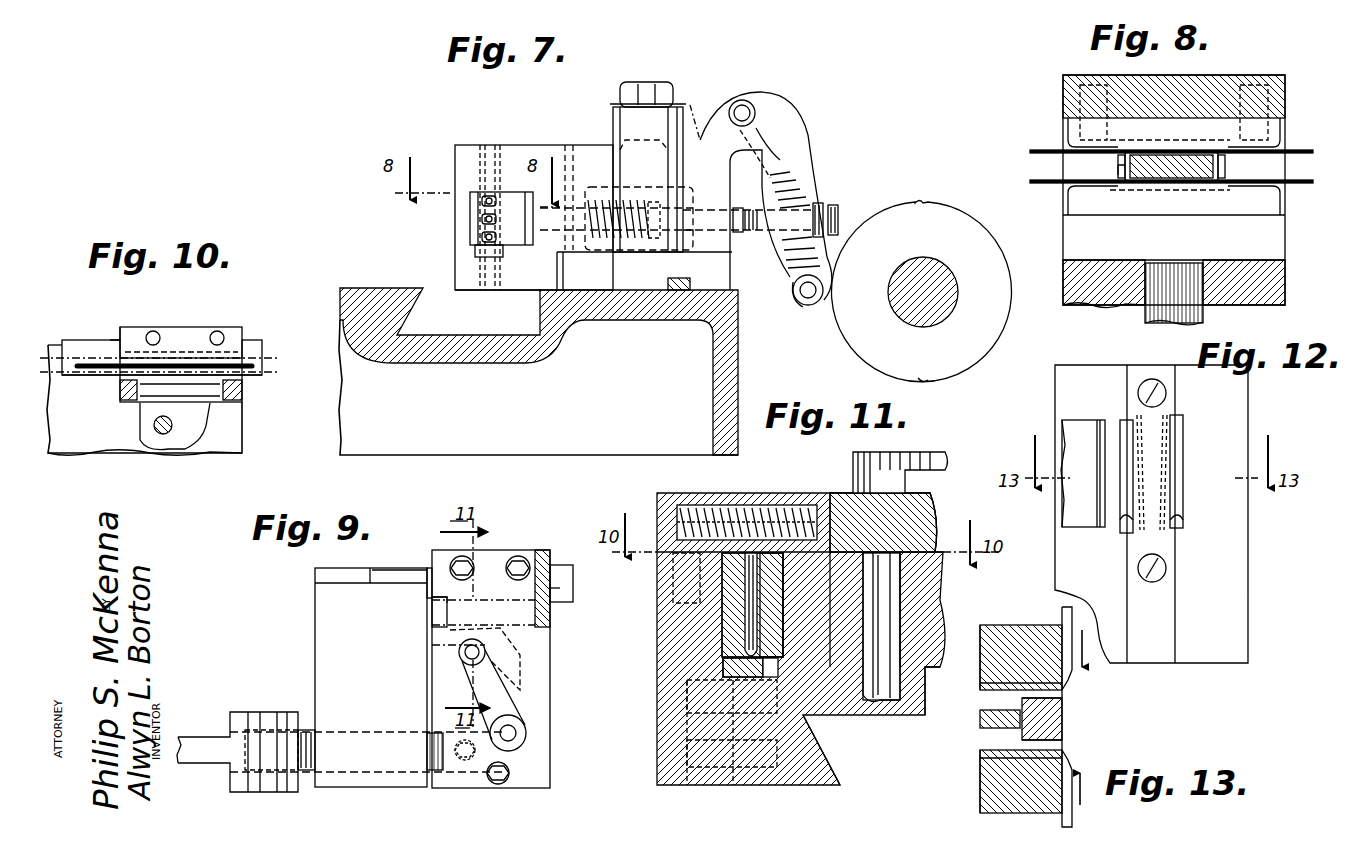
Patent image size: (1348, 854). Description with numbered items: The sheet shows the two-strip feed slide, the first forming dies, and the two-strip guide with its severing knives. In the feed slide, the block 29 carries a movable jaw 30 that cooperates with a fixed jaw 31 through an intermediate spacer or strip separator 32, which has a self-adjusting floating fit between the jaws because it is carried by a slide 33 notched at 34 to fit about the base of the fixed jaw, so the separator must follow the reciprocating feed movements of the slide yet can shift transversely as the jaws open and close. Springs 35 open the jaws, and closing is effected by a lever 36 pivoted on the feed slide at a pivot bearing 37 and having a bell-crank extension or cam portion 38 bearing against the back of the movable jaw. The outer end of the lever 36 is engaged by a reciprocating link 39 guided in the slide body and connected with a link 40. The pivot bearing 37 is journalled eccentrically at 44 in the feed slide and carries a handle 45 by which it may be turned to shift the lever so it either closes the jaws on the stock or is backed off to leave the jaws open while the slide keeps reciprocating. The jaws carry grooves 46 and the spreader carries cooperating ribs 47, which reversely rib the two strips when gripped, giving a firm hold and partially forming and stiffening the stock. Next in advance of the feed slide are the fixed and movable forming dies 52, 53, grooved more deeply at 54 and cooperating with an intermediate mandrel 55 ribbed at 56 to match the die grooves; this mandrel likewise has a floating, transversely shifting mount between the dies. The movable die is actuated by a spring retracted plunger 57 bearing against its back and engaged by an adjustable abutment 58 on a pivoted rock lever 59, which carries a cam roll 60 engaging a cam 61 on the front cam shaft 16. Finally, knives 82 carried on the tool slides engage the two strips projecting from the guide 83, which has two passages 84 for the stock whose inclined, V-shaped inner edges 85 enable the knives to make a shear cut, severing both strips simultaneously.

In FIG. 7, the front cam shaft 16 is at (958, 292).
In FIG. 10, the clamp block 29 is at (228, 326).
In FIG. 9, the clamp block 29 is at (500, 545).
In FIG. 11, the clamp block 29 is at (700, 490).
In FIG. 10, the movable jaw 30 is at (235, 378).
In FIG. 11, the movable jaw 30 is at (772, 560).
In FIG. 10, the fixed jaw 31 is at (178, 350).
In FIG. 11, the fixed jaw 31 is at (725, 622).
In FIG. 10, the spacer or strip separator 32 is at (268, 366).
In FIG. 9, the spacer or strip separator 32 is at (573, 588).
In FIG. 11, the spacer or strip separator 32 is at (748, 632).
In FIG. 10, the slide 33 is at (80, 352).
In FIG. 9, the slide 33 is at (390, 568).
In FIG. 11, the slide 33 is at (660, 755).
In FIG. 10, the notch 34 is at (118, 340).
In FIG. 9, the notch 34 is at (428, 568).
In FIG. 11, the notch 34 is at (723, 675).
In FIG. 9, the springs 35 is at (548, 552).
In FIG. 11, the springs 35 is at (740, 505).
In FIG. 9, the lever 36 is at (450, 688).
In FIG. 11, the lever 36 is at (905, 630).
In FIG. 10, the pivot bearing 37 is at (155, 425).
In FIG. 9, the pivot bearing 37 is at (430, 650).
In FIG. 11, the pivot bearing 37 is at (870, 608).
In FIG. 10, the bell-crank extension or cam portion 38 is at (195, 410).
In FIG. 9, the bell-crank extension or cam portion 38 is at (500, 668).
In FIG. 11, the bell-crank extension or cam portion 38 is at (840, 580).
In FIG. 9, the reciprocating link 39 is at (308, 772).
In FIG. 9, the link 40 is at (200, 755).
In FIG. 9, the eccentric journal 44 is at (500, 690).
In FIG. 11, the eccentric journal 44 is at (890, 527).
In FIG. 9, the handle 45 is at (526, 728).
In FIG. 11, the handle 45 is at (930, 458).
In FIG. 11, the grooves 46 is at (748, 560).
In FIG. 11, the ribs 47 is at (790, 675).
In FIG. 8, the forming die 52 is at (1182, 150).
In FIG. 8, the forming die 53 is at (1192, 193).
In FIG. 7, the grooves 54 is at (500, 236).
In FIG. 8, the grooves 54 is at (1158, 145).
In FIG. 7, the mandrel 55 is at (487, 195).
In FIG. 8, the mandrel 55 is at (1210, 166).
In FIG. 7, the ribs 56 is at (492, 252).
In FIG. 8, the ribs 56 is at (1142, 180).
In FIG. 7, the plunger 57 is at (563, 252).
In FIG. 8, the plunger 57 is at (1160, 268).
In FIG. 7, the adjustable abutment 58 is at (790, 192).
In FIG. 7, the rock lever 59 is at (792, 148).
In FIG. 7, the cam roll 60 is at (803, 308).
In FIG. 7, the cam 61 is at (896, 220).
In FIG. 12, the knives 82 is at (1105, 425).
In FIG. 13, the knives 82 is at (1062, 613).
In FIG. 12, the guide 83 is at (1240, 632).
In FIG. 12, the passages 84 is at (1128, 450).
In FIG. 13, the passages 84 is at (1020, 697).
In FIG. 12, the V-shaped inner edges 85 is at (1170, 528).
In FIG. 13, the V-shaped inner edges 85 is at (1060, 700).